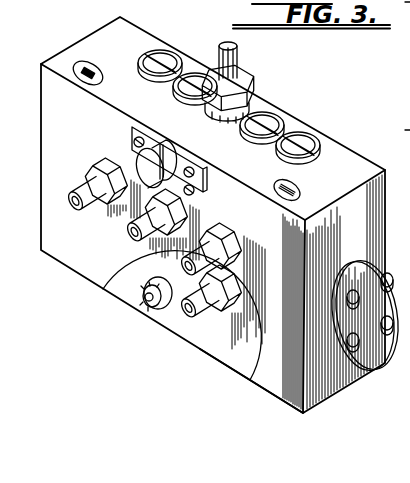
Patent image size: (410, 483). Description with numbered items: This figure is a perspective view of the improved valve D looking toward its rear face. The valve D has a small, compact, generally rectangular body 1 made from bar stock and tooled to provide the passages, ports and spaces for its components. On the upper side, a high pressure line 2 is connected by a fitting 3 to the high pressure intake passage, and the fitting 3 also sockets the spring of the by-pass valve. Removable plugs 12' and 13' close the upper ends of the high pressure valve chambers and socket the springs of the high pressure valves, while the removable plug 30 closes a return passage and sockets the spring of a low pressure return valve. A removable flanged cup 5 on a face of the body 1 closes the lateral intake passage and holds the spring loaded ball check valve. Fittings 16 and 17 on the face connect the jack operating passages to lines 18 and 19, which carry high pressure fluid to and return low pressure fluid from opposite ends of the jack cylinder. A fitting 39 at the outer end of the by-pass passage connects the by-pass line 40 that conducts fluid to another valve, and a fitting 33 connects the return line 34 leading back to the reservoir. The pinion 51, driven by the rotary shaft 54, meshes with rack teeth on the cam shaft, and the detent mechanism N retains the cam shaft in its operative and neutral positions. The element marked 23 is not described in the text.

The body 1 is at (97, 40).
The pinion 51 is at (157, 52).
The removable plug 13' is at (195, 65).
The high pressure line 2 is at (237, 54).
The fitting 3 is at (249, 100).
The removable plug 12' is at (281, 115).
The removable plug 30 is at (310, 133).
The removable flanged cup 5 is at (158, 150).
The fitting 17 is at (83, 178).
The line 19 is at (72, 203).
The by-pass line 40 is at (127, 234).
The fitting 39 is at (183, 216).
The fitting 16 is at (238, 242).
The line 18 is at (177, 266).
The fitting 33 is at (238, 280).
The return line 34 is at (208, 312).
The rotary shaft 54 is at (148, 298).
The detent mechanism N is at (158, 320).
The valve D is at (279, 407).
The flange 23 is at (378, 373).